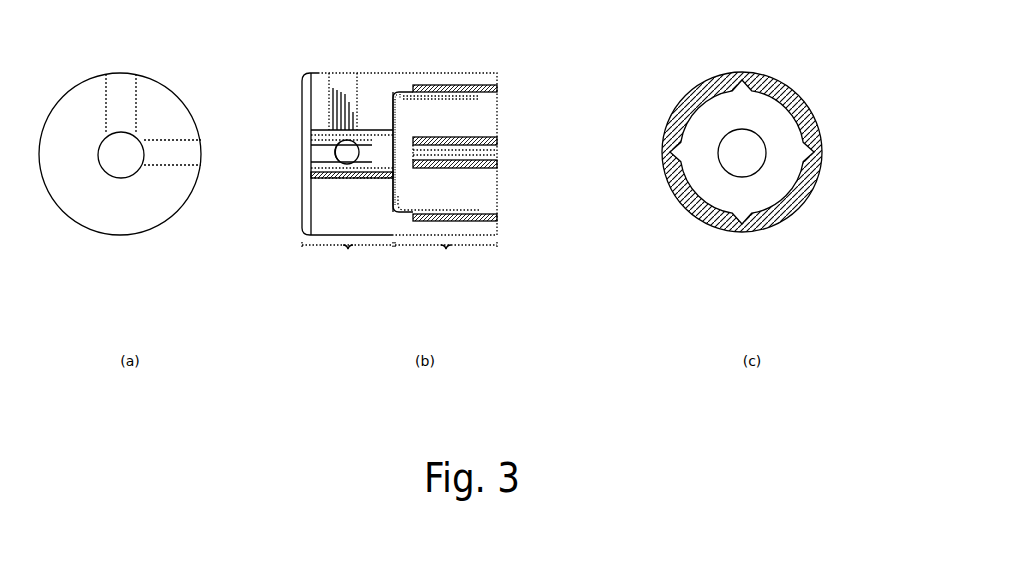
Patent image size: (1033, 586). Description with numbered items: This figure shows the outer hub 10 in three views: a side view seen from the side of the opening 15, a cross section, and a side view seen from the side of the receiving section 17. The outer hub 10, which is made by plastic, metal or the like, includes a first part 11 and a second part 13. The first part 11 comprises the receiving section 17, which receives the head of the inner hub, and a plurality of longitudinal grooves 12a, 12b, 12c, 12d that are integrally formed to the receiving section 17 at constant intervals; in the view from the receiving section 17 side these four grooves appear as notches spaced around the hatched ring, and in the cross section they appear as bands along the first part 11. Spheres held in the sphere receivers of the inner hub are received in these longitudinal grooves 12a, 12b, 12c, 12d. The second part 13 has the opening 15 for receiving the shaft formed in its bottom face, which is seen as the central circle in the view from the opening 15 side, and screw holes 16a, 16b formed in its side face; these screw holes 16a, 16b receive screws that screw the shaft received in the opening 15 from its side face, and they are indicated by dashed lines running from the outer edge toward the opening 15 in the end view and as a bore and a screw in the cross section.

The outer hub 10 is at (180, 84).
The first part 11 is at (445, 182).
The longitudinal groove 12a is at (497, 90).
The longitudinal groove 12b is at (497, 155).
The longitudinal groove 12c is at (497, 218).
The longitudinal groove 12d is at (662, 145).
The second part 13 is at (399, 173).
The opening 15 is at (123, 133).
The screw hole 16a is at (114, 80).
The screw hole 16b is at (195, 165).
The receiving section 17 is at (497, 120).